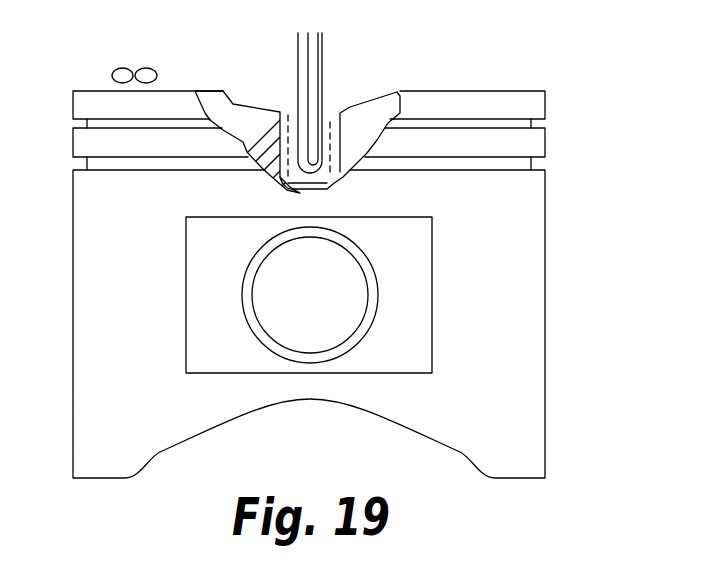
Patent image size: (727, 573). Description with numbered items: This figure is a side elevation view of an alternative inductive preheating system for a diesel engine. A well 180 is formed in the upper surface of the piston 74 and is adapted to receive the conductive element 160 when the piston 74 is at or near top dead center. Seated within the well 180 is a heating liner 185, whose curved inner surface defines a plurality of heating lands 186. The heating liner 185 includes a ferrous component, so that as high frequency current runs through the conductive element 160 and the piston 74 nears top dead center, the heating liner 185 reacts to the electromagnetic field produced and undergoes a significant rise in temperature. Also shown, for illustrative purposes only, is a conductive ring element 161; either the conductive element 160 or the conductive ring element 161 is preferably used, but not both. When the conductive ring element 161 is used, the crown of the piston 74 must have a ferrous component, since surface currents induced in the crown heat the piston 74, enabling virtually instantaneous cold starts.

The piston 74 is at (507, 275).
The conductive ring element 161 is at (117, 67).
The heating liner 185 is at (268, 127).
The heating lands 186 is at (338, 110).
The conductive element 160 is at (322, 48).
The well 180 is at (290, 114).